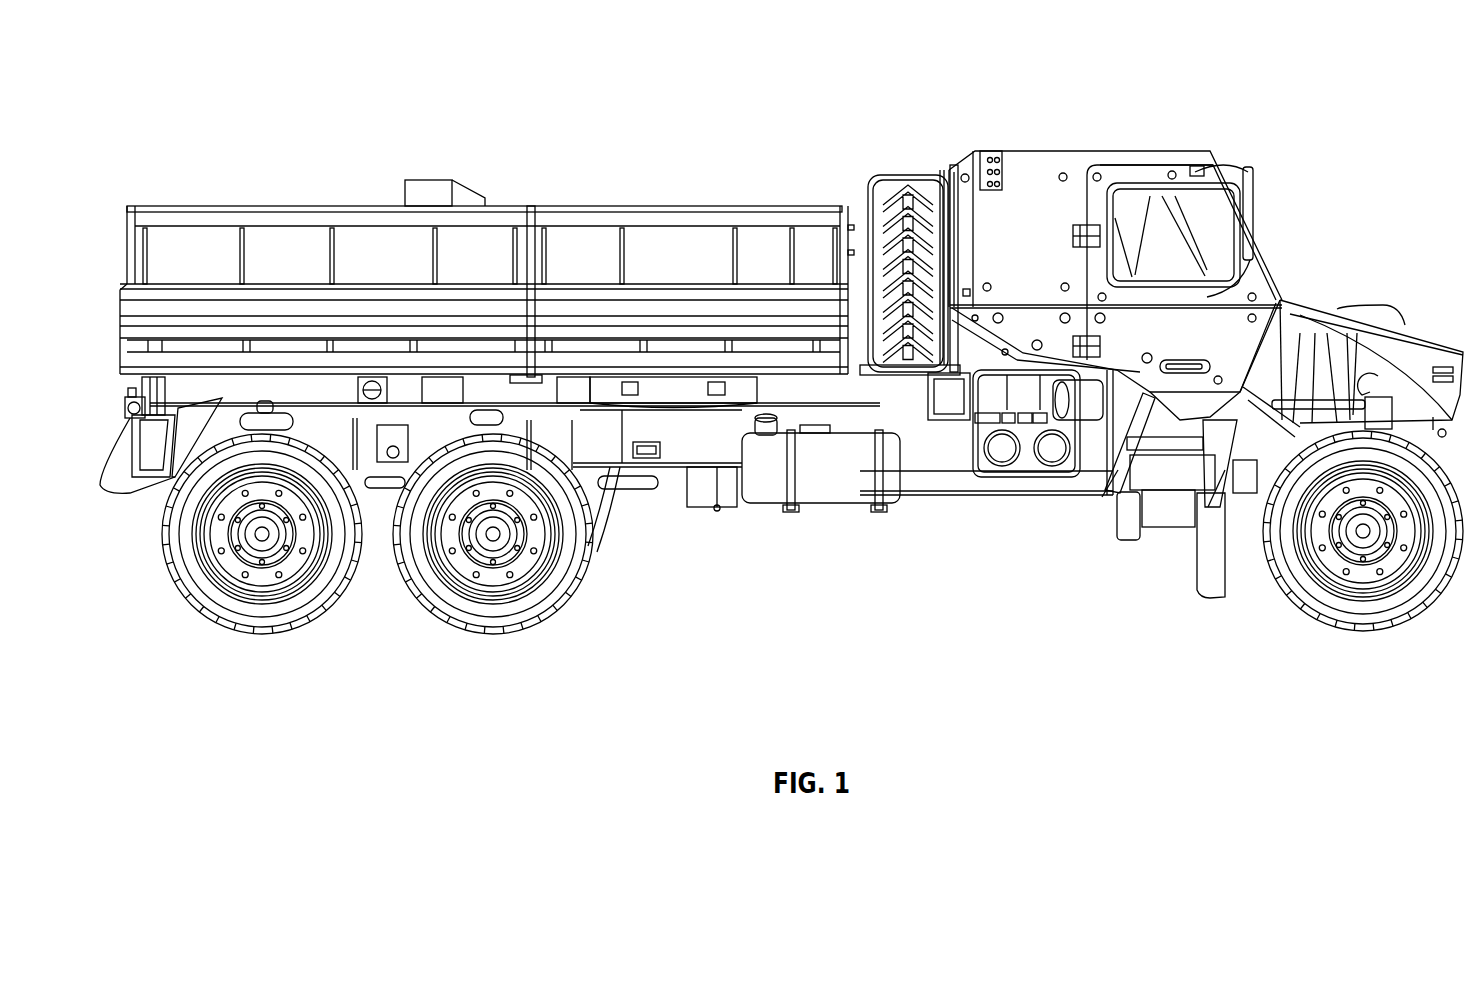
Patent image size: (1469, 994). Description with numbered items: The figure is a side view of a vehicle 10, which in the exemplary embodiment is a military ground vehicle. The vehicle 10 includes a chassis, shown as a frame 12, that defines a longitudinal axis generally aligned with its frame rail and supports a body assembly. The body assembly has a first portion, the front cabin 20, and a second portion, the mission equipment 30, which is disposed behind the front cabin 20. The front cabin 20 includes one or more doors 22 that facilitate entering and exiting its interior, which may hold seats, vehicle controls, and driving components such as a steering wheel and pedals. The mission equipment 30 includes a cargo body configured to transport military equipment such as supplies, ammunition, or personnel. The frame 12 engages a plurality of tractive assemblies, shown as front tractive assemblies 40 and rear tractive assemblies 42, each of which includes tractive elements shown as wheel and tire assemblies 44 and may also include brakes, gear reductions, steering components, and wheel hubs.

The vehicle 10 is at (196, 112).
The frame 12 is at (670, 447).
The front cabin 20 is at (1104, 130).
The doors 22 is at (1210, 320).
The mission equipment 30 is at (582, 180).
The front tractive assemblies 40 is at (1366, 640).
The rear tractive assemblies 42 is at (266, 645).
The wheel and tire assemblies 44 is at (230, 602).